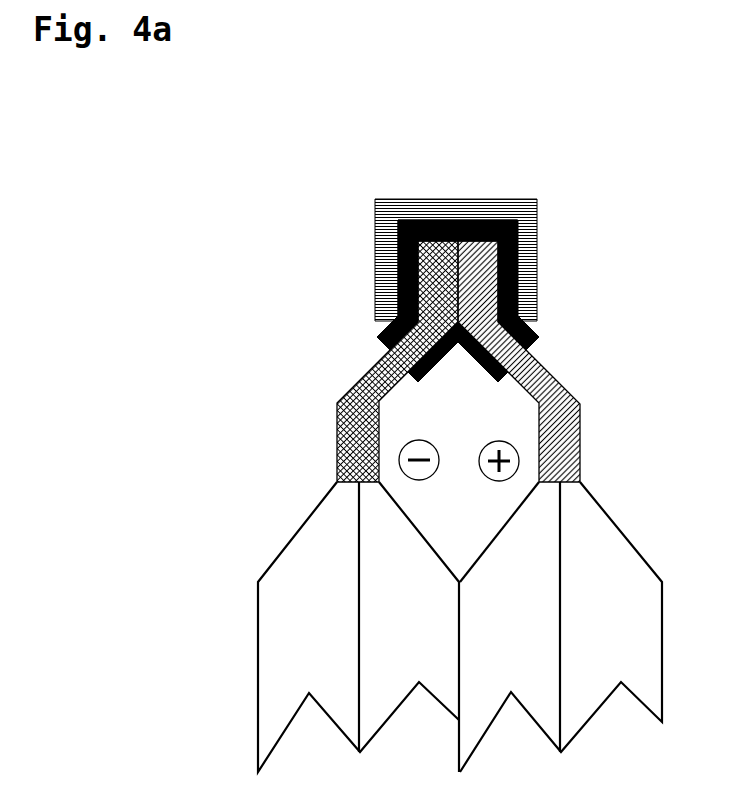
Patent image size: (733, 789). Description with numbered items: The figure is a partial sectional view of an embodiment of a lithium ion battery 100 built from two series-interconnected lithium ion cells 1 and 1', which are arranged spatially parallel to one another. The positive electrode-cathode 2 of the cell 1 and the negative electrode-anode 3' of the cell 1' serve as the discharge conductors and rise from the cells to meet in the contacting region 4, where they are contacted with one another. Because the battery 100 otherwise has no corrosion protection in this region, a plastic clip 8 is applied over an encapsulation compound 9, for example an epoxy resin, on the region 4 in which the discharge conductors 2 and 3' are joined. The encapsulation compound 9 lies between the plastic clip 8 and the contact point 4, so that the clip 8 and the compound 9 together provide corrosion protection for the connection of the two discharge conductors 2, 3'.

The lithium ion battery 100 is at (355, 188).
The plastic clip 8 is at (532, 200).
The encapsulation compound 9 is at (532, 332).
The contacting region 4 is at (377, 223).
The positive electrode-cathode discharge conductor 2 is at (580, 408).
The negative electrode-anode discharge conductor 3' is at (338, 361).
The lithium ion cell 1 is at (566, 612).
The lithium ion cell 1' is at (353, 615).